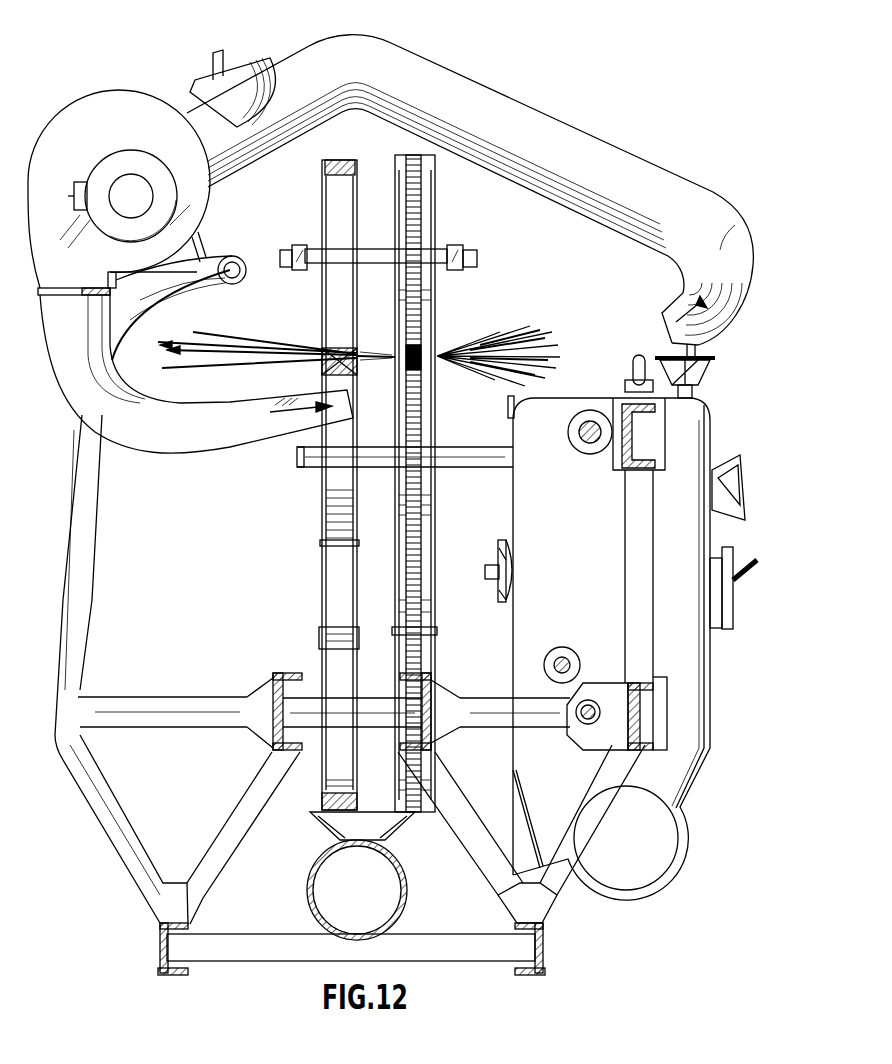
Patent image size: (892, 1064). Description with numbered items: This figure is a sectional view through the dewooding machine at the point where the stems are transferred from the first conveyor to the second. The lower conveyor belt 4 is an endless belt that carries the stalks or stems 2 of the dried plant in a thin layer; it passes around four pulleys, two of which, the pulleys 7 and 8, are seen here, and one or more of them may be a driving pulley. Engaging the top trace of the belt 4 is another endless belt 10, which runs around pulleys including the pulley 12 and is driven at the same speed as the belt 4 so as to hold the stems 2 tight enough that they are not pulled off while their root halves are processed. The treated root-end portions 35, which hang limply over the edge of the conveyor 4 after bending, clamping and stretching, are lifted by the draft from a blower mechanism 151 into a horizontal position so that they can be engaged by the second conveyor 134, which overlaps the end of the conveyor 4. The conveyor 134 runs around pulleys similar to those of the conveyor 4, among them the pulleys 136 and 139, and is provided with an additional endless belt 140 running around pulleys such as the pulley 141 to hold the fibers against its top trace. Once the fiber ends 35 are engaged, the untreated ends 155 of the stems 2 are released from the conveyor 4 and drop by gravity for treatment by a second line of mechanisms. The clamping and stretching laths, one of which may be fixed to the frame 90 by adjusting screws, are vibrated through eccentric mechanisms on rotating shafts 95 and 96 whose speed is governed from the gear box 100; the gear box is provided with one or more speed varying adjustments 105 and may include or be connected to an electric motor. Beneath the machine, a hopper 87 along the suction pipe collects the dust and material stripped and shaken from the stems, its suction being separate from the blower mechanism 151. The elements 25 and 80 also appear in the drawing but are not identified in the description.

The blower mechanism 151 is at (102, 135).
The endless belt 10 is at (345, 163).
The pulley 12 is at (320, 203).
The additional endless belt 140 is at (436, 208).
The pulley 141 is at (436, 299).
The untreated ends 155 is at (230, 354).
The stalks or stems 2 is at (368, 352).
The fiber ends 35 is at (467, 352).
The lower conveyor belt 4 is at (322, 370).
The speed varying adjustments 105 is at (633, 370).
The rotating shaft 95 is at (578, 432).
The gear box 100 is at (549, 561).
The pulley 7 is at (326, 500).
The pulley 136 is at (435, 503).
The frame 90 is at (85, 605).
The conveyor 134 is at (422, 607).
The pulley 8 is at (330, 650).
The pulley 139 is at (436, 648).
The bearing 25 is at (556, 661).
The rotating shaft 96 is at (583, 720).
The hopper 87 is at (322, 826).
The collecting tube 80 is at (346, 908).